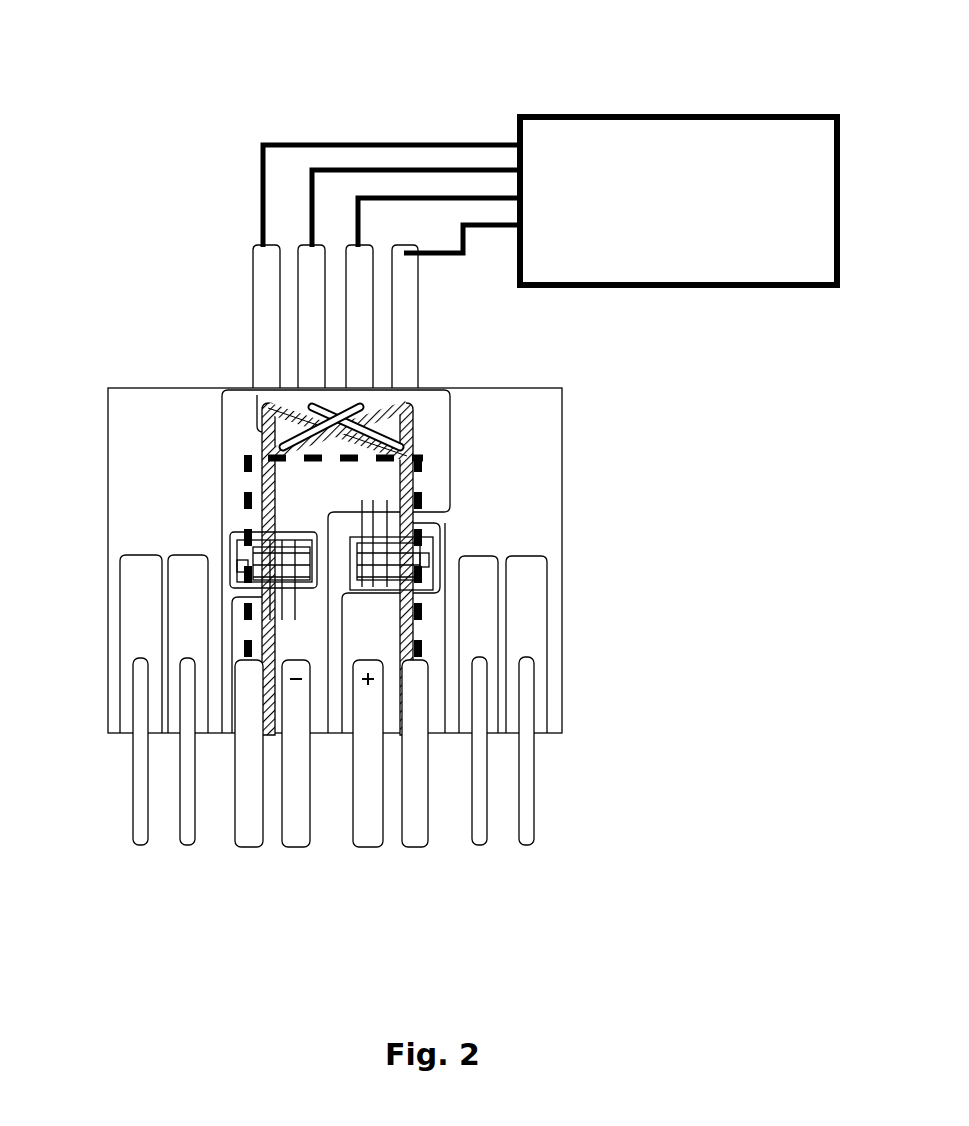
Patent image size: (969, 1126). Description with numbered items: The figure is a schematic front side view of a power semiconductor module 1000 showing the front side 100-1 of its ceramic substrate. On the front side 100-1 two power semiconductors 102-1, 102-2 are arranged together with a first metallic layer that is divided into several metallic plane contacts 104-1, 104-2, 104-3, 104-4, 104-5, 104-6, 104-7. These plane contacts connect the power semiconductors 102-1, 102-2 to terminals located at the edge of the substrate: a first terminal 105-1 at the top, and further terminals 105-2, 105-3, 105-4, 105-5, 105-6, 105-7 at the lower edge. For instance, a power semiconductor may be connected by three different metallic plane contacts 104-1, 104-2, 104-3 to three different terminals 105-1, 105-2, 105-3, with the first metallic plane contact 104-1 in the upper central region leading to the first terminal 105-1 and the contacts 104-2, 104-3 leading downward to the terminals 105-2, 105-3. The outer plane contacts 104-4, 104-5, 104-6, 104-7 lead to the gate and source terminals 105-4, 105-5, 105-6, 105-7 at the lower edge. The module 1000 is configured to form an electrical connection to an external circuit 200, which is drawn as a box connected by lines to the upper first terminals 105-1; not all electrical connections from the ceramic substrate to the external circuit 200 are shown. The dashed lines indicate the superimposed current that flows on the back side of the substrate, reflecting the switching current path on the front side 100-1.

The power semiconductor module 1000 is at (165, 106).
The external circuit 200 is at (693, 273).
The front side 100-1 is at (548, 478).
The first terminal 105-1 is at (300, 292).
The first metallic plane contact 104-1 is at (447, 420).
The metallic plane contact 104-2 is at (348, 737).
The metallic plane contact 104-3 is at (232, 737).
The metallic plane contact 104-4 is at (487, 597).
The metallic plane contact 104-5 is at (538, 720).
The metallic plane contact 104-6 is at (130, 630).
The metallic plane contact 104-7 is at (178, 588).
The power semiconductor 102-1 is at (245, 552).
The power semiconductor 102-2 is at (425, 542).
The terminal 105-2 is at (375, 848).
The terminal 105-3 is at (287, 848).
The terminal 105-4 is at (478, 848).
The terminal 105-5 is at (522, 848).
The terminal 105-6 is at (138, 848).
The terminal 105-7 is at (190, 848).